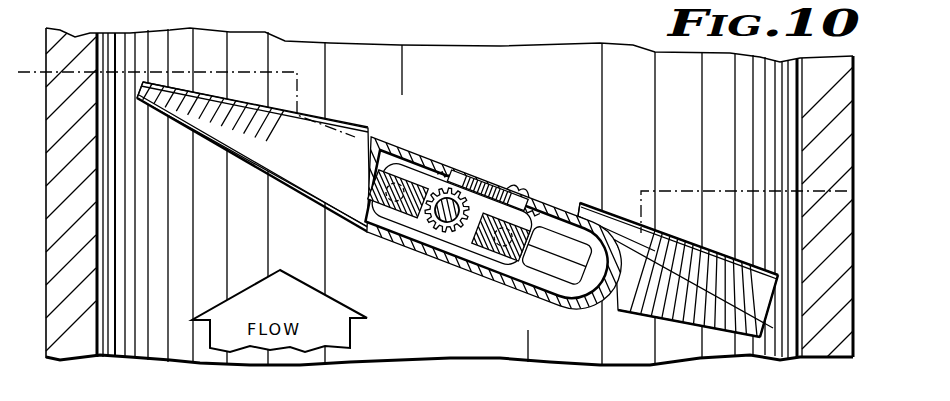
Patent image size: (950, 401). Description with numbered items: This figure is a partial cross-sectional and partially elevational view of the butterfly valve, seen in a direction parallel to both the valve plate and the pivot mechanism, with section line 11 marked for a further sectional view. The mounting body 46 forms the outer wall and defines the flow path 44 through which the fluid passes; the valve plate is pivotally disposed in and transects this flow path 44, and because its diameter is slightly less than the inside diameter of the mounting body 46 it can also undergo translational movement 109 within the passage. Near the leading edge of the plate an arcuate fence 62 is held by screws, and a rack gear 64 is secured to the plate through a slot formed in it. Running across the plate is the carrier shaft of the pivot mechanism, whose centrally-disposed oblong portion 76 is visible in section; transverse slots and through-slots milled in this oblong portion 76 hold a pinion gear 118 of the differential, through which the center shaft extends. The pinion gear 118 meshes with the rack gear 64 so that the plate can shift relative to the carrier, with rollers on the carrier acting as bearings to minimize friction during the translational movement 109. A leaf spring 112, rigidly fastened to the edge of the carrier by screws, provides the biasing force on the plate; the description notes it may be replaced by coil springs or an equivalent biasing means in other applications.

The section line 11- 11 is at (27, 96).
The flow path 44 is at (224, 236).
The mounting body 46 is at (72, 350).
The arcuate fence 62 is at (680, 238).
The rack gear 64 is at (520, 190).
The oblong portion 76 is at (473, 221).
The translational movement 109 is at (447, 210).
The leaf spring 112 is at (565, 262).
The pinion gear 118 is at (466, 177).